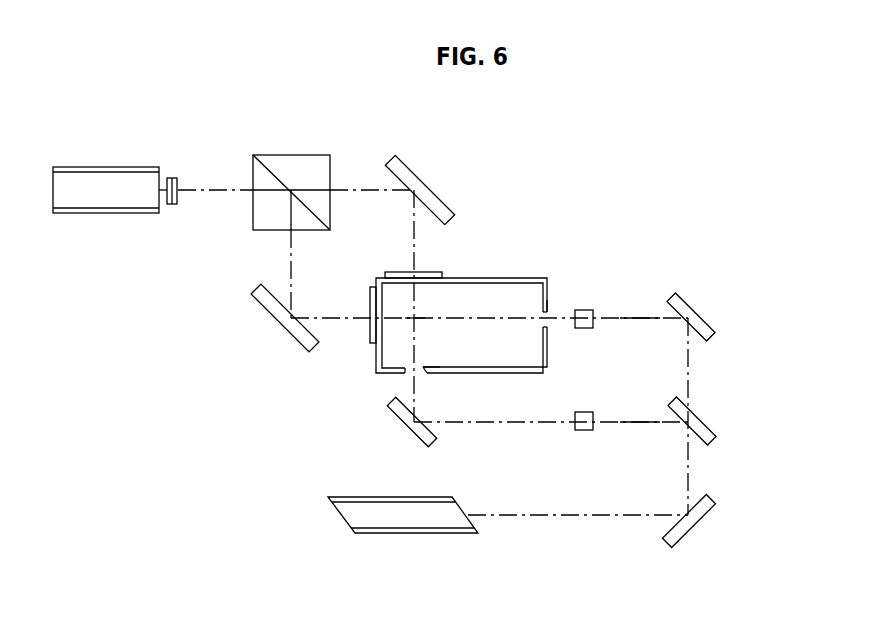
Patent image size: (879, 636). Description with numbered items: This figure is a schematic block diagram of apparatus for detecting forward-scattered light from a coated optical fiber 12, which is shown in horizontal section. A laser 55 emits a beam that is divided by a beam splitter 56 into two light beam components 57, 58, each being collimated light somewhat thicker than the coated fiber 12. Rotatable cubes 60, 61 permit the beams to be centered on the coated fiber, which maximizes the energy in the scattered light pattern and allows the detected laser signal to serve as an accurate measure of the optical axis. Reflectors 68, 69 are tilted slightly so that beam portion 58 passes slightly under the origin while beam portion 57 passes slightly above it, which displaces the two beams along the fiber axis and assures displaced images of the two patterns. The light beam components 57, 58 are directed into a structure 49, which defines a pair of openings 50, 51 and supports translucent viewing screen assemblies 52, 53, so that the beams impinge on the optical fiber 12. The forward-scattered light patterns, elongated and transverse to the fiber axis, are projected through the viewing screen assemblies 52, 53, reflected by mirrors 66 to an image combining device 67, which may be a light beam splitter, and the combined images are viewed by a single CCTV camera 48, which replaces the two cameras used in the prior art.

The CCTV camera 48 is at (113, 167).
The image combining device 67 is at (307, 155).
The mirrors 66 is at (432, 196).
The reflector 68 is at (700, 321).
The beam splitter 56 is at (703, 425).
The reflector 69 is at (408, 430).
The rotatable cube 61 is at (585, 308).
The rotatable cube 60 is at (584, 430).
The viewing screen assembly 52 is at (442, 272).
The viewing screen assembly 53 is at (371, 287).
The structure 49 is at (547, 355).
The opening 51 is at (548, 310).
The coated fiber 12 is at (414, 318).
The opening 50 is at (422, 376).
The light beam component 58 is at (640, 318).
The light beam component 57 is at (640, 423).
The laser 55 is at (410, 533).